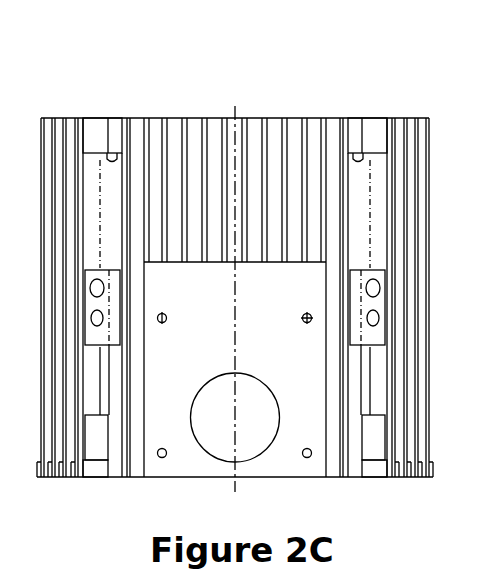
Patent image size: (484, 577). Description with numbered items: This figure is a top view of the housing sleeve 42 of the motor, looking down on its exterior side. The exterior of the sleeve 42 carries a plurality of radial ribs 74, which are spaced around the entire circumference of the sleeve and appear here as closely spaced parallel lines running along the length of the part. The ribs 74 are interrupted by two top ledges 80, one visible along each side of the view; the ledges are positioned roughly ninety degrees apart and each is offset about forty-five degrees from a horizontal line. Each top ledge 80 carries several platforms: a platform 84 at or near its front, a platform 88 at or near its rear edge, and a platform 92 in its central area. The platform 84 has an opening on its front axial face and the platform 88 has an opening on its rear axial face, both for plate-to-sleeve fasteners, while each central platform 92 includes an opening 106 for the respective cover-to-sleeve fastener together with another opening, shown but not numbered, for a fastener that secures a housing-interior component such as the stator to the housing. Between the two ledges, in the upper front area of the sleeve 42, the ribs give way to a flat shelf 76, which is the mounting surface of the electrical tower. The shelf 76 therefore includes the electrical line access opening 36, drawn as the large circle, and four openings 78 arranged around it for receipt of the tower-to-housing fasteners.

The housing sleeve 42 is at (262, 104).
The radial ribs 74 is at (320, 118).
The top ledges 80 is at (90, 218).
The platform 88 is at (101, 135).
The platform 92 is at (100, 336).
The opening 106 is at (98, 290).
The platform 84 is at (103, 468).
The flat shelf 76 is at (262, 464).
The electrical line access opening 36 is at (218, 449).
The openings 78 is at (167, 318).